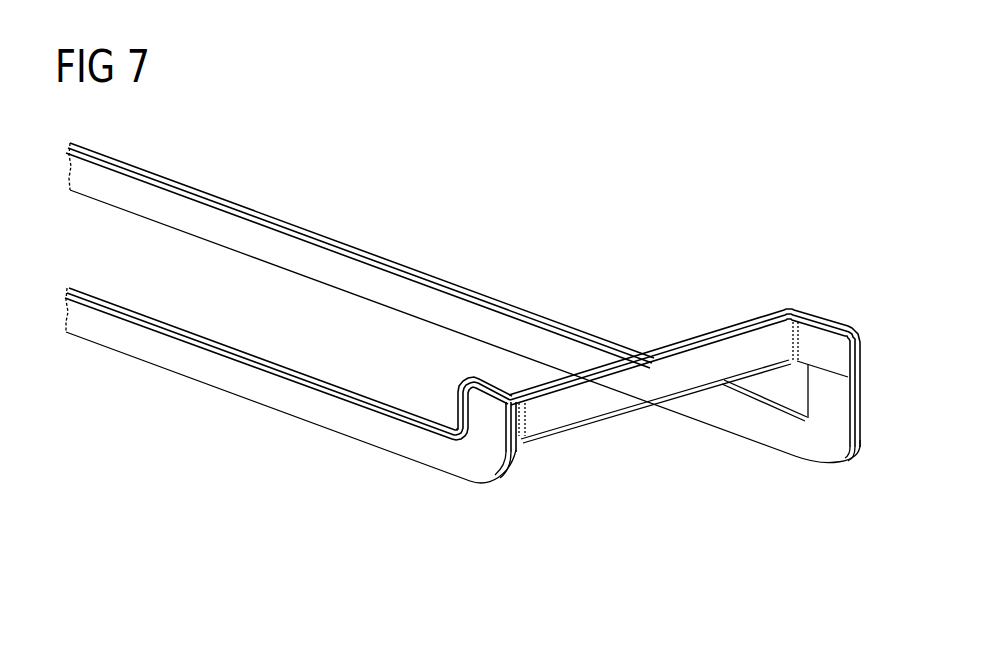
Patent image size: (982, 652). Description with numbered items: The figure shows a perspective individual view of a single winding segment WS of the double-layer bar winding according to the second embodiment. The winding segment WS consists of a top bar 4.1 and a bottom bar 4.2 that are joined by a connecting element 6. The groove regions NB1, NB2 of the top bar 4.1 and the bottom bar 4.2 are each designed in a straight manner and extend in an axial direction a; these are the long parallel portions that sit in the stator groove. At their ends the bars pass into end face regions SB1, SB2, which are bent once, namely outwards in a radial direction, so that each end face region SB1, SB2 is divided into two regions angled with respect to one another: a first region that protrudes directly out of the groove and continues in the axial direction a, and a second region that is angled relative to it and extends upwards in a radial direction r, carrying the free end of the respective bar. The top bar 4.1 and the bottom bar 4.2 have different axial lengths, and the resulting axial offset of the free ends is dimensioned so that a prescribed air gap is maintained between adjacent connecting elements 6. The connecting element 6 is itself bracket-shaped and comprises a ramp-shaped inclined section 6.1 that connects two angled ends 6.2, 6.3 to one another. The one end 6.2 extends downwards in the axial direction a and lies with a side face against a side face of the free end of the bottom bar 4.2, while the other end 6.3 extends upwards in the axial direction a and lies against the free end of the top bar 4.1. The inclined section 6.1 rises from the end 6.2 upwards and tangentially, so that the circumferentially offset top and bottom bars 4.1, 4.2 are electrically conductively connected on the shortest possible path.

The groove region NB1 is at (203, 226).
The groove region NB2 is at (200, 368).
The top bar 4.1 is at (790, 433).
The bottom bar 4.2 is at (392, 447).
The connecting element 6 is at (625, 403).
The inclined section 6.1 is at (662, 377).
The end of the connecting element 6.2 is at (490, 385).
The end of the connecting element 6.3 is at (833, 346).
The end face region SB1 is at (834, 425).
The end face region SB2 is at (483, 438).
The winding segment WS is at (610, 302).
The radial direction r is at (867, 219).
The axial direction a is at (143, 417).